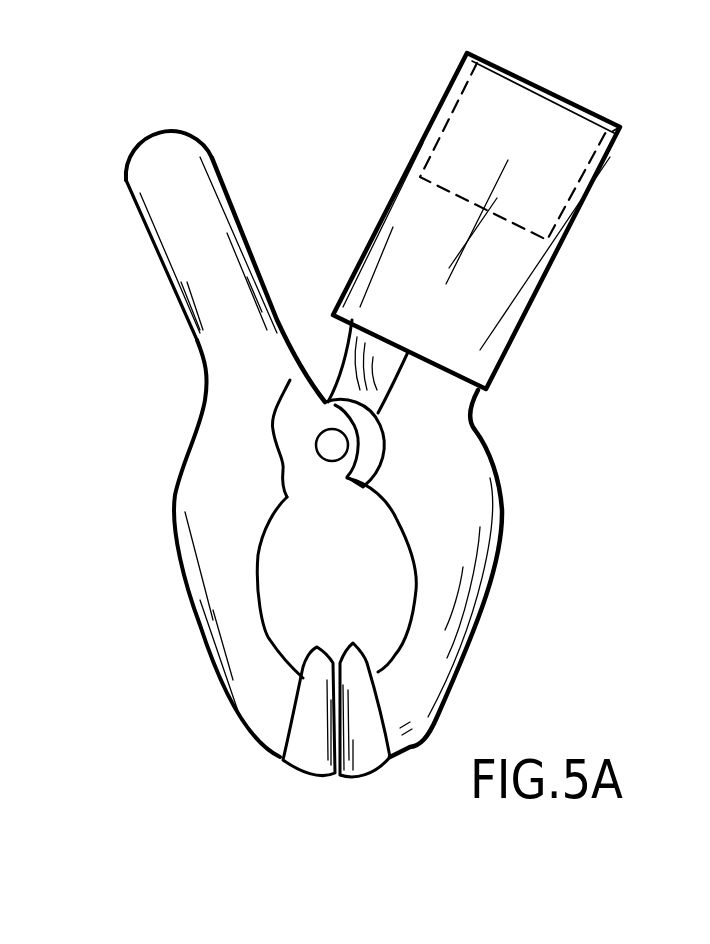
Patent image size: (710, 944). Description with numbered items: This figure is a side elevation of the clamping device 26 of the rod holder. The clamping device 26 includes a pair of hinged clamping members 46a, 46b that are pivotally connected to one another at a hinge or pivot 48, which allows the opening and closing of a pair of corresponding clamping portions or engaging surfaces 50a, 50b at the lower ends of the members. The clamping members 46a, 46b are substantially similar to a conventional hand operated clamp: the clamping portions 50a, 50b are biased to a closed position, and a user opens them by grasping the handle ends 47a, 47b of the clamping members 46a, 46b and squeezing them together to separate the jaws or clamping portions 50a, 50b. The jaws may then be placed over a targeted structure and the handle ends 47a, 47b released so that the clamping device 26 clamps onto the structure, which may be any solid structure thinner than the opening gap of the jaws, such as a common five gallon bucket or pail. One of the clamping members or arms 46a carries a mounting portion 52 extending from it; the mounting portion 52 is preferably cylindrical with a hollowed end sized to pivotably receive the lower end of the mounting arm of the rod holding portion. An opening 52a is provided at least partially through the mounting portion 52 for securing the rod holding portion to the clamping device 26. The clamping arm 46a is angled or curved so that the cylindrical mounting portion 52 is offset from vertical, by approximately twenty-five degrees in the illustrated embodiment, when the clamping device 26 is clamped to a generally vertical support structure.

The clamping device 26 is at (222, 67).
The handle end 47b is at (187, 267).
The clamping member 46b is at (188, 470).
The handle end 47a is at (513, 311).
The mounting portion 52 is at (392, 190).
The opening 52a is at (603, 170).
The clamping member 46a is at (487, 425).
The hinge or pivot 48 is at (333, 445).
The clamping portion 50b is at (313, 760).
The clamping portion 50a is at (367, 763).